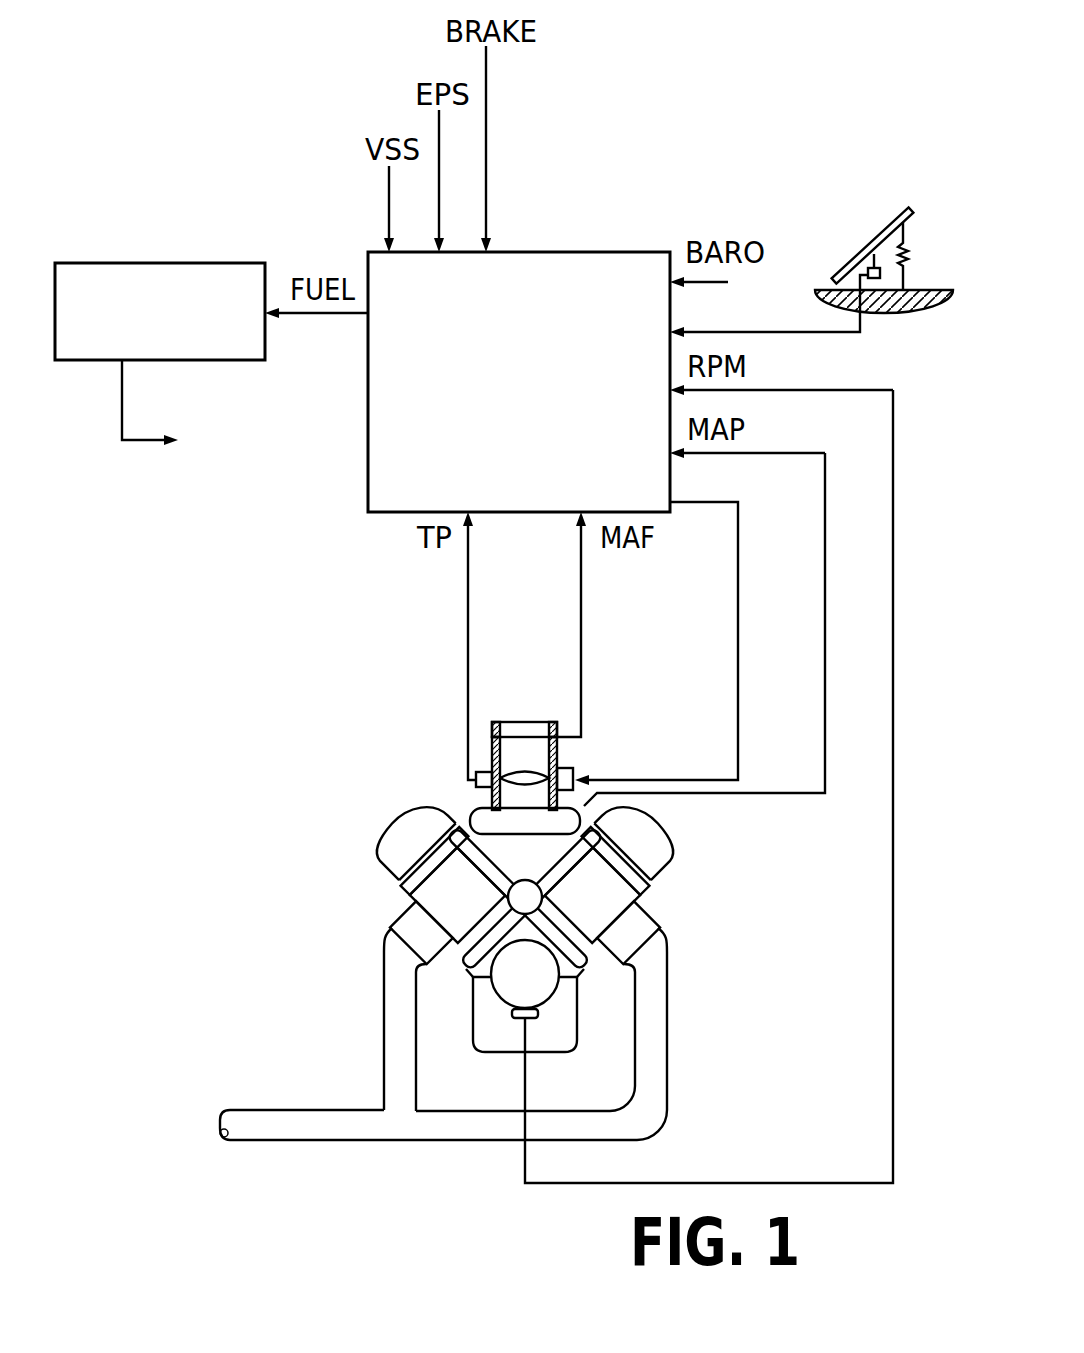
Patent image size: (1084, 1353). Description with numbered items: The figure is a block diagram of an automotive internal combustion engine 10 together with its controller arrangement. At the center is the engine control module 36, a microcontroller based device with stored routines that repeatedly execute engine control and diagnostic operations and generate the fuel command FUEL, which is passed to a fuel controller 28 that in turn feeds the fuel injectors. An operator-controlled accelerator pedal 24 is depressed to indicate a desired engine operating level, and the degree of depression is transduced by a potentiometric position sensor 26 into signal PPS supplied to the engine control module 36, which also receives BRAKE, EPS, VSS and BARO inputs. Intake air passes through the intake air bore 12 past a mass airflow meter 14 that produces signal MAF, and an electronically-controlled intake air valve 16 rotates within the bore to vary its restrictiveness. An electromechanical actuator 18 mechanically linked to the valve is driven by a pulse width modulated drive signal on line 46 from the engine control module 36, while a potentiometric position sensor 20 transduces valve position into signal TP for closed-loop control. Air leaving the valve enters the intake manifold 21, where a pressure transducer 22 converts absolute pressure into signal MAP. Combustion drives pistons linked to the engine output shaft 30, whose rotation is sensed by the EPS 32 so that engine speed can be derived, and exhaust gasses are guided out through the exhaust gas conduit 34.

The engine 10 is at (394, 906).
The intake air bore 12 is at (496, 722).
The mass airflow meter 14 is at (538, 722).
The intake air valve 16 is at (527, 767).
The electromechanical actuator 18 is at (572, 768).
The potentiometric position sensor 20 is at (485, 772).
The intake manifold 21 is at (480, 820).
The pressure transducer 22 is at (578, 808).
The accelerator pedal 24 is at (892, 226).
The potentiometric position sensor 26 is at (868, 268).
The fuel controller 28 is at (158, 263).
The engine output shaft 30 is at (515, 983).
The EPS 32 is at (513, 1018).
The exhaust gas conduit 34 is at (402, 1090).
The engine control module 36 is at (523, 252).
The line 46 is at (705, 502).